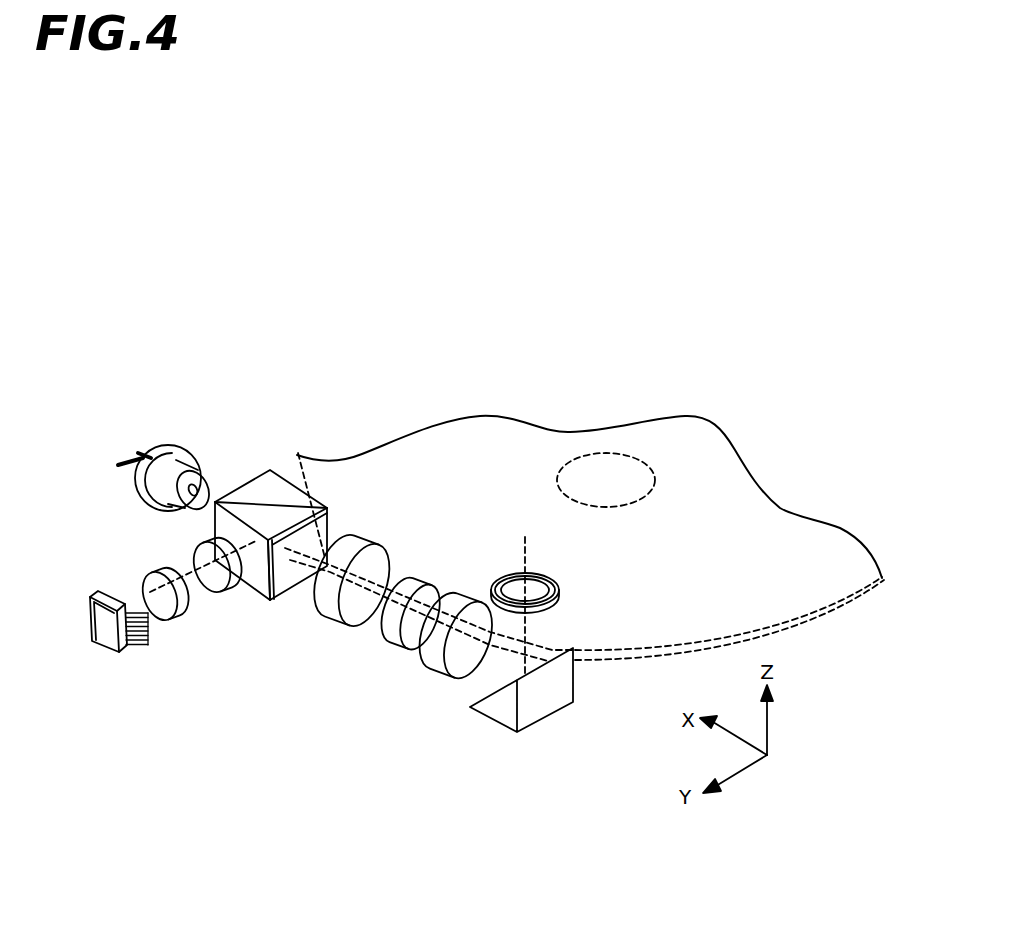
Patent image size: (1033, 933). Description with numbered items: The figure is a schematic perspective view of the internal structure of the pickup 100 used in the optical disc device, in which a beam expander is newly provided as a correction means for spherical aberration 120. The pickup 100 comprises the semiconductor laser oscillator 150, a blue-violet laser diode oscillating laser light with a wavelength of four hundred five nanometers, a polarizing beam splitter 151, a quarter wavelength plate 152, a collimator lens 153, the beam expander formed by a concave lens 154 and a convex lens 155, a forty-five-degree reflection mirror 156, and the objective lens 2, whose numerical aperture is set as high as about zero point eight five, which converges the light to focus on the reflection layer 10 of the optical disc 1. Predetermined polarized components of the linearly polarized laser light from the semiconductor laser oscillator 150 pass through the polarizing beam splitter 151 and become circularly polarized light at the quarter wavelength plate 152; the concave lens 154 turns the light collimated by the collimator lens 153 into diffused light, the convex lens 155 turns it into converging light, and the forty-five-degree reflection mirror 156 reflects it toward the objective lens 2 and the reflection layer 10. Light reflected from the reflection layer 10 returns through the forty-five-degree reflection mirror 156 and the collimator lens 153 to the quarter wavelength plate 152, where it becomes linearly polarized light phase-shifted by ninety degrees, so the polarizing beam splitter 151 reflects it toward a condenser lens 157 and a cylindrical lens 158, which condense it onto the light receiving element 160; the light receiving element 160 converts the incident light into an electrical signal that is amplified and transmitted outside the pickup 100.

The object surface 1 is at (793, 578).
The objective lens 2 is at (559, 592).
The reflection layer 10 is at (610, 662).
The pickup 100 is at (163, 687).
The correction means for spherical aberration 120 is at (365, 630).
The semiconductor laser oscillator 150 is at (136, 486).
The polarizing beam splitter 151 is at (252, 478).
The quarter wavelength plate 152 is at (290, 597).
The collimator lens 153 is at (365, 548).
The concave lens 154 is at (426, 584).
The convex lens 155 is at (455, 668).
The 45-degree reflection mirror 156 is at (490, 718).
The condenser lens 157 is at (190, 548).
The cylindrical lens 158 is at (137, 577).
The light receiving element 160 is at (98, 646).